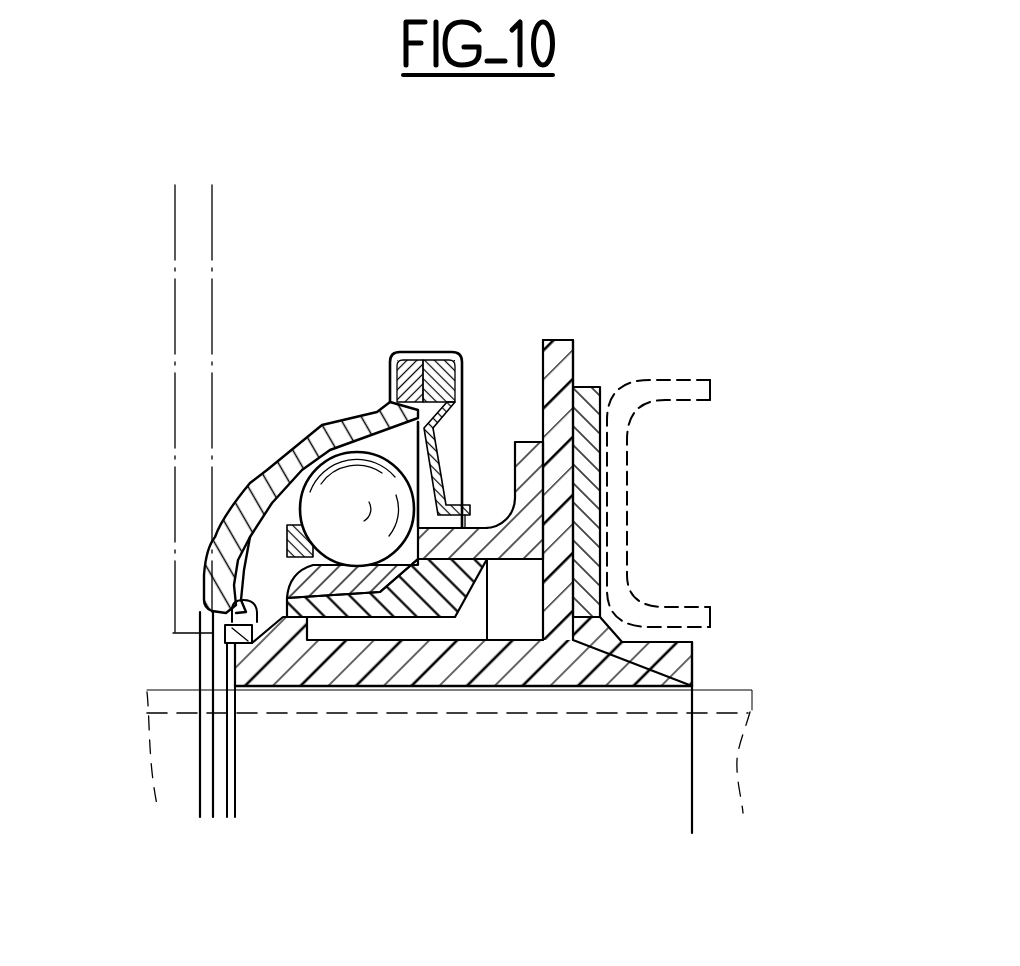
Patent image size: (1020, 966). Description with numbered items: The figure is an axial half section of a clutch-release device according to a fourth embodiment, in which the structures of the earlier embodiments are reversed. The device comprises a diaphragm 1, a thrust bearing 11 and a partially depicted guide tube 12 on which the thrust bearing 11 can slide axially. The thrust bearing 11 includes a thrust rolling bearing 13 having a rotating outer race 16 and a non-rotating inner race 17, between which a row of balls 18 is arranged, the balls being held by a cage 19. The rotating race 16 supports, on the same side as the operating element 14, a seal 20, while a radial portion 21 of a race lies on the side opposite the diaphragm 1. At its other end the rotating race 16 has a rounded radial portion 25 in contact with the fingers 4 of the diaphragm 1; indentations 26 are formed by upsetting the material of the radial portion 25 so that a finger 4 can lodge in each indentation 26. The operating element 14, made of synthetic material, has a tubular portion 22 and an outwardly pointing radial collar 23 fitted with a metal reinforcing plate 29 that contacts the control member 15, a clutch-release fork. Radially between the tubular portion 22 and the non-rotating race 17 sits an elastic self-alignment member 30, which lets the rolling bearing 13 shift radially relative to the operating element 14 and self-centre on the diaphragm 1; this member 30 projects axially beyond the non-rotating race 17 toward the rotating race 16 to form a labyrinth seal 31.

The diaphragm 1 is at (153, 285).
The fingers 4 is at (187, 590).
The thrust bearing 11 is at (553, 302).
The guide tube 12 is at (738, 735).
The thrust rolling bearing 13 is at (418, 340).
The operating element 14 is at (603, 333).
The control member 15 is at (702, 382).
The rotating outer race 16 is at (320, 430).
The non-rotating inner race 17 is at (445, 545).
The balls 18 is at (360, 480).
The cage 19 is at (277, 486).
The seal 20 is at (460, 370).
The radial portion 21 is at (530, 457).
The tubular portion 22 is at (490, 690).
The radial collar 23 is at (573, 352).
The rounded radial portion 25 is at (203, 548).
The indentations 26 is at (229, 610).
The metal reinforcing plate 29 is at (610, 383).
The elastic self-alignment member 30 is at (365, 600).
The labyrinth seal 31 is at (240, 633).